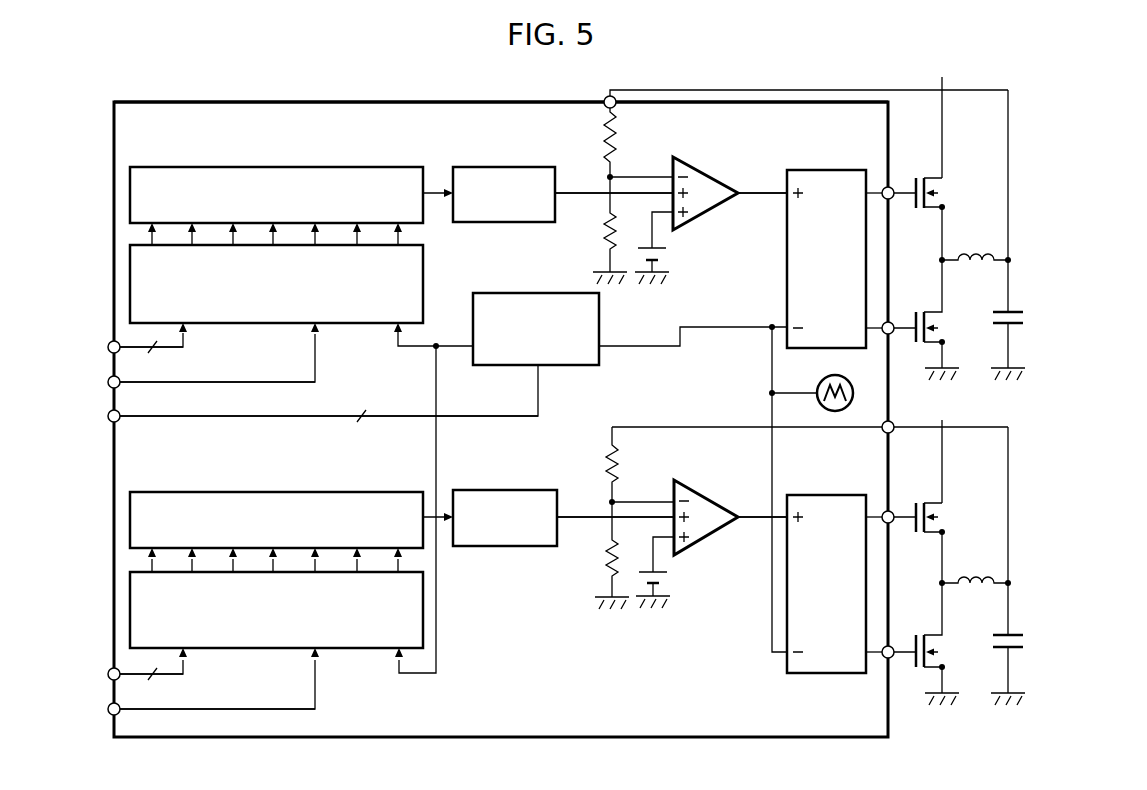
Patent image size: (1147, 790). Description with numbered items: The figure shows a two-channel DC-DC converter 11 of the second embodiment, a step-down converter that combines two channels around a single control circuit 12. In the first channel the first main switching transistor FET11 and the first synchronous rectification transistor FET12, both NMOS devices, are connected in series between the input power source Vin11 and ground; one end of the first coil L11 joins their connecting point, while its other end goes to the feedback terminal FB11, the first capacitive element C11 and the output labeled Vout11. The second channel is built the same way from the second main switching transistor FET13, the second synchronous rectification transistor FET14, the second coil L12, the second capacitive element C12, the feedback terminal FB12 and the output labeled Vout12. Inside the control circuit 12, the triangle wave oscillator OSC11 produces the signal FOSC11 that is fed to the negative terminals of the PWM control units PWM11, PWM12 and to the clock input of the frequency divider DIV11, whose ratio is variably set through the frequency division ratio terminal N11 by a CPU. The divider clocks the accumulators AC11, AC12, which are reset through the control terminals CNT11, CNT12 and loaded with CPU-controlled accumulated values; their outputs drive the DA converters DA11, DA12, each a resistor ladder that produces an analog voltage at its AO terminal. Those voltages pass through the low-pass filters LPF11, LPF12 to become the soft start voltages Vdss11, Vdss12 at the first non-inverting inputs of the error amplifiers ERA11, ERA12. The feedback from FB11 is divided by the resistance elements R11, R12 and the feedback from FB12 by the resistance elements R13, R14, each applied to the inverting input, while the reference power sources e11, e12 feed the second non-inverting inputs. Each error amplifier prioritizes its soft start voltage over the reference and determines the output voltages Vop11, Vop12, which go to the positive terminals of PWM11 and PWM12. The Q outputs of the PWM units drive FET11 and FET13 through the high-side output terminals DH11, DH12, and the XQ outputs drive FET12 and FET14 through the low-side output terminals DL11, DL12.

The two-channel DC-DC converter 11 is at (335, 94).
The control circuit 12 is at (220, 101).
The DA converter DA11 is at (285, 167).
The DA converter DA12 is at (288, 492).
The accumulator AC11 is at (423, 270).
The accumulator AC12 is at (386, 652).
The low-pass filter LPF11 is at (469, 167).
The low-pass filter LPF12 is at (505, 490).
The frequency divider DIV11 is at (536, 293).
The oscillation clock signal FOSC11 is at (651, 345).
The triangle wave oscillator OSC11 is at (820, 380).
The feedback terminal FB11 is at (604, 96).
The feedback terminal FB12 is at (882, 432).
The resistance element R11 is at (619, 144).
The resistance element R12 is at (595, 230).
The resistance element R13 is at (621, 466).
The resistance element R14 is at (597, 555).
The soft start voltage Vdss11 is at (585, 192).
The soft start voltage Vdss12 is at (585, 517).
The error amplifier ERA11 is at (698, 170).
The error amplifier ERA12 is at (699, 490).
The output voltage Vop11 is at (748, 189).
The output voltage Vop12 is at (744, 516).
The reference power source e11 is at (670, 248).
The reference power source e12 is at (671, 572).
The PWM control unit PWM11 is at (838, 163).
The PWM control unit PWM12 is at (833, 488).
The high-side output terminal DH11 is at (894, 187).
The high-side output terminal DH12 is at (894, 512).
The low-side output terminal DL11 is at (894, 319).
The low-side output terminal DL12 is at (894, 645).
The first main switching transistor FET11 is at (947, 194).
The first synchronous rectification transistor FET12 is at (947, 320).
The second main switching transistor FET13 is at (947, 519).
The second synchronous rectification transistor FET14 is at (947, 644).
The first coil L11 is at (975, 235).
The second coil L12 is at (975, 559).
The first capacitive element C11 is at (1028, 320).
The second capacitive element C12 is at (1028, 644).
The input power source Vin11 is at (942, 279).
The output voltage Vout11 is at (1008, 215).
The output voltage Vout12 is at (1008, 540).
The control terminal CNT11 is at (108, 377).
The control terminal CNT12 is at (108, 704).
The frequency division ratio terminal N11 is at (108, 411).